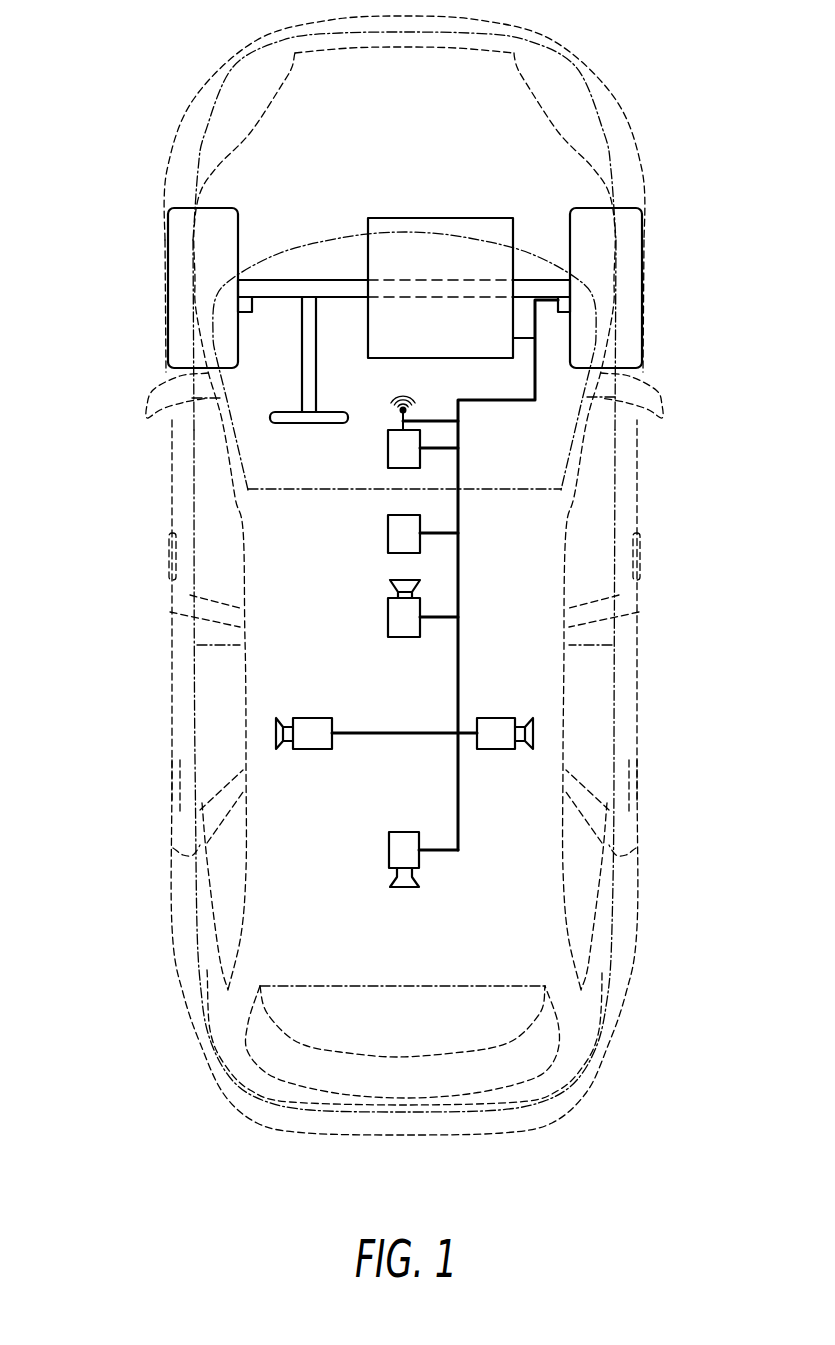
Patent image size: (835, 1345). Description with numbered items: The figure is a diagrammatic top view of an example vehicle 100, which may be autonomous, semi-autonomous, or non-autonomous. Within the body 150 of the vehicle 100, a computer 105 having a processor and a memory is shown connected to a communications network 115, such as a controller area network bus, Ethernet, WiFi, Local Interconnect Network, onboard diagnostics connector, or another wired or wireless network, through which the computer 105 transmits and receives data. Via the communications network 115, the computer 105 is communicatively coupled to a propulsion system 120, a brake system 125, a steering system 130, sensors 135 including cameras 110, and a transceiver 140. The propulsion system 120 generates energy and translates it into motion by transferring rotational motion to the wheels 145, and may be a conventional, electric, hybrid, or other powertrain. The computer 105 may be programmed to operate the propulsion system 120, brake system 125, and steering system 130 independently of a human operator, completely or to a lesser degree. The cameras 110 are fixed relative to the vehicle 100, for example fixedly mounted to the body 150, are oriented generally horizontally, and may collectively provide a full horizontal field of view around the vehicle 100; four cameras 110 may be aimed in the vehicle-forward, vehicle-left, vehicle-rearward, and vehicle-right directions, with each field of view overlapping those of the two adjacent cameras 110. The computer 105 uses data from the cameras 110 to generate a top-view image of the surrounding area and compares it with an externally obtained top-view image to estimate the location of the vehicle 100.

The vehicle 100 is at (67, 73).
The computer 105 is at (388, 457).
The camera 110 is at (388, 610).
The communications network 115 is at (458, 567).
The propulsion system 120 is at (397, 218).
The brake system 125 is at (563, 312).
The steering system 130 is at (306, 280).
The sensors 135 is at (388, 525).
The transceiver 140 is at (400, 407).
The wheels 145 is at (168, 240).
The body 150 is at (625, 893).